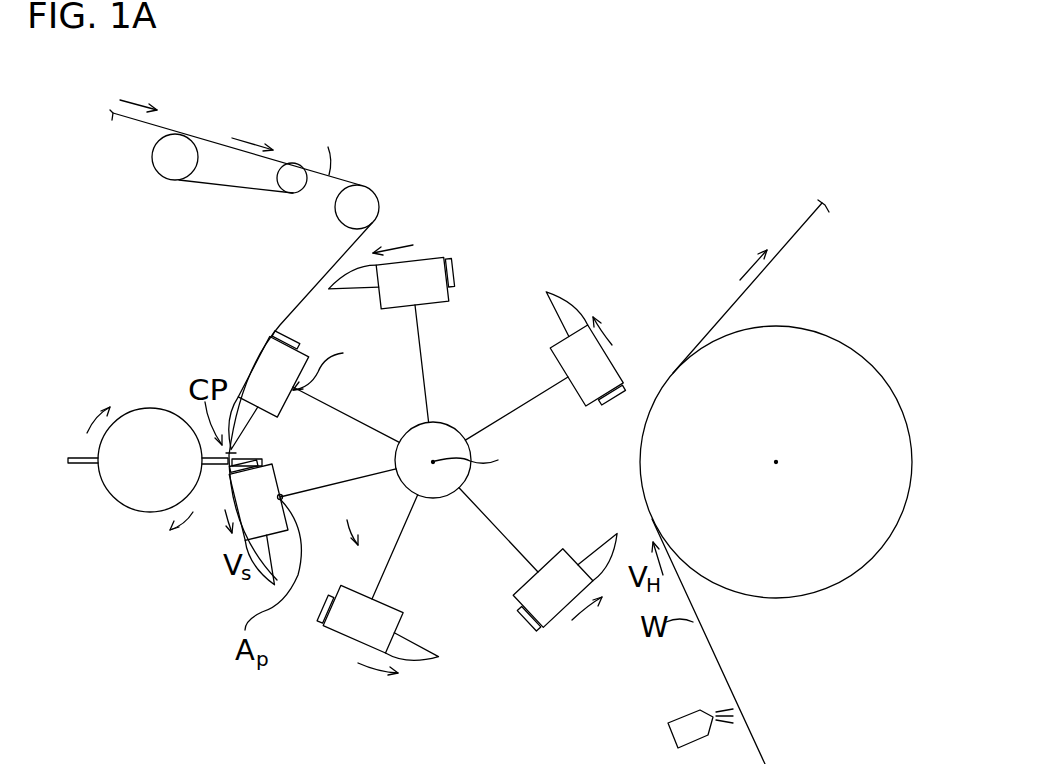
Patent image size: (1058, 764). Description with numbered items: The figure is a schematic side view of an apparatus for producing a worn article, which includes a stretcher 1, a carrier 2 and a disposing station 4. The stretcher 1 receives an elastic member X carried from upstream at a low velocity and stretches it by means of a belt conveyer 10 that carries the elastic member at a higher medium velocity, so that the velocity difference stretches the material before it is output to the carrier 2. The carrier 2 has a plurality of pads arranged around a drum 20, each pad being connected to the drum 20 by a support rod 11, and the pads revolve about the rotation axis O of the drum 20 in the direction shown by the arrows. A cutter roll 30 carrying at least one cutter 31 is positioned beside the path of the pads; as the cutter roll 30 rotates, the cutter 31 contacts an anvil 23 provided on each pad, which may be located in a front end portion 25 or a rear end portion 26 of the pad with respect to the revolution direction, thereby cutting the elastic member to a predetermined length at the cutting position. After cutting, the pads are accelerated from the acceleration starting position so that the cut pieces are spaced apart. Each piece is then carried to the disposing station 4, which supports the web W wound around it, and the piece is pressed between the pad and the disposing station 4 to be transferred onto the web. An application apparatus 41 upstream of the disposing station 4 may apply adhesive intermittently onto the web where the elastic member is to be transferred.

The stretcher 1 is at (366, 152).
The carrier 2 is at (500, 258).
The disposing station 4 is at (857, 352).
The belt conveyer 10 is at (178, 147).
The support rod 11 is at (421, 333).
The drum 20 is at (448, 422).
The anvil 23 is at (453, 258).
The front end portion 25 is at (240, 450).
The rear end portion 26 is at (260, 460).
The cutter roll 30 is at (147, 513).
The cutter 31 is at (95, 466).
The application apparatus 41 is at (683, 717).